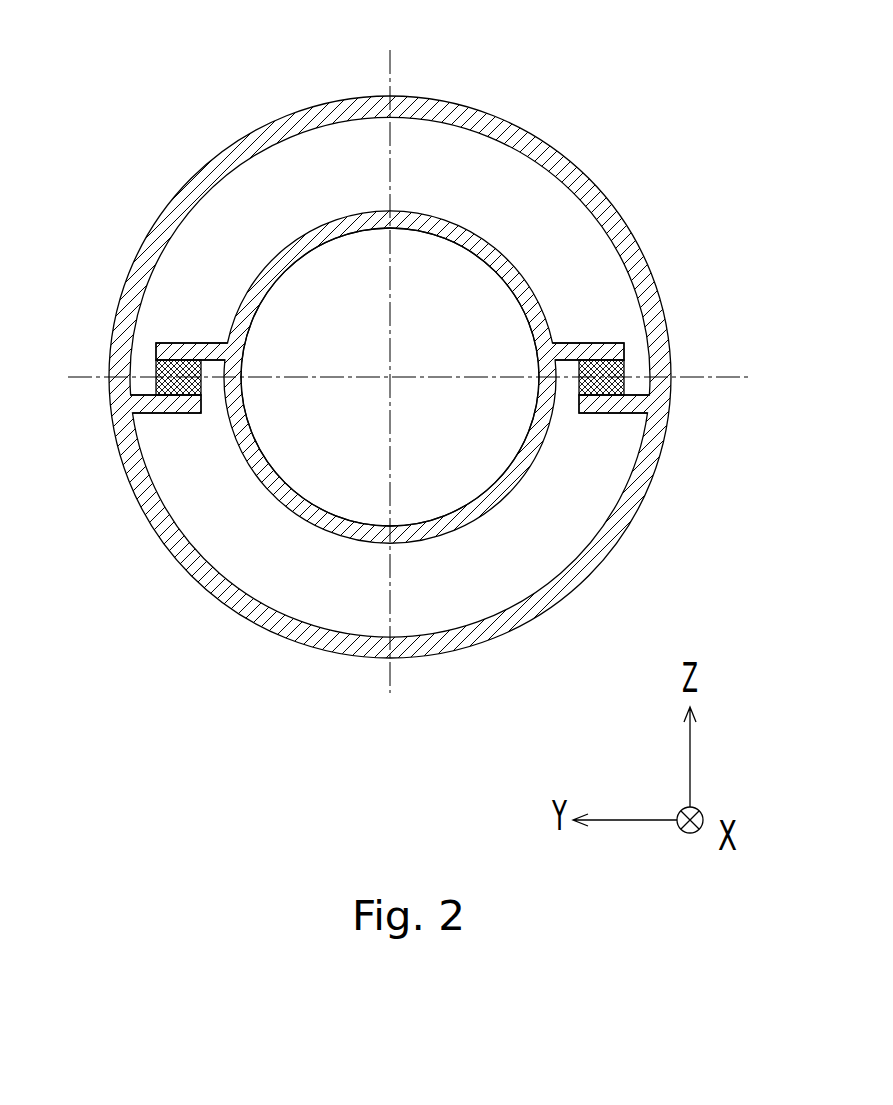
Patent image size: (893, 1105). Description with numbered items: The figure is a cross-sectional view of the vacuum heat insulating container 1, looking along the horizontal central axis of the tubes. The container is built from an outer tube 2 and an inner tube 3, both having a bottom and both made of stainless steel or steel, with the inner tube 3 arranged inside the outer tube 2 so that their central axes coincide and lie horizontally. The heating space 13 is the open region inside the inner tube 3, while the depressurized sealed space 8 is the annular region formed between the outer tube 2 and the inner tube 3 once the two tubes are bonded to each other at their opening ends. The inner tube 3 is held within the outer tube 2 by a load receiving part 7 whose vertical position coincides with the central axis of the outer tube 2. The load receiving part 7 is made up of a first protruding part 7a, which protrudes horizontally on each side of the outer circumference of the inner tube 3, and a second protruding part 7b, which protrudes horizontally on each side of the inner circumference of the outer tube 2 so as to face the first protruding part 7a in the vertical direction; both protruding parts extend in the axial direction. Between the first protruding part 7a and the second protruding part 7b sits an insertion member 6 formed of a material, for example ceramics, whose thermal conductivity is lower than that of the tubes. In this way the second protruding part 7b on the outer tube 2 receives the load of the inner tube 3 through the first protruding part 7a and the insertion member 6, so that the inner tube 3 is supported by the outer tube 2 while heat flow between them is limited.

The vacuum heat insulating container 1 is at (58, 33).
The outer tube 2 is at (587, 176).
The inner tube 3 is at (475, 236).
The insertion member 6 is at (156, 372).
The load receiving part 7 is at (253, 496).
The first protruding part 7a is at (214, 366).
The second protruding part 7b is at (183, 414).
The depressurized sealed space 8 is at (247, 227).
The heating space 13 is at (368, 288).